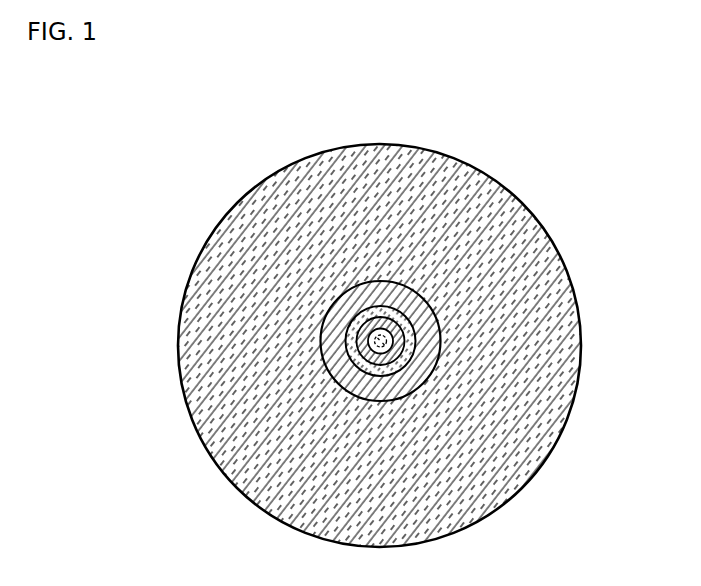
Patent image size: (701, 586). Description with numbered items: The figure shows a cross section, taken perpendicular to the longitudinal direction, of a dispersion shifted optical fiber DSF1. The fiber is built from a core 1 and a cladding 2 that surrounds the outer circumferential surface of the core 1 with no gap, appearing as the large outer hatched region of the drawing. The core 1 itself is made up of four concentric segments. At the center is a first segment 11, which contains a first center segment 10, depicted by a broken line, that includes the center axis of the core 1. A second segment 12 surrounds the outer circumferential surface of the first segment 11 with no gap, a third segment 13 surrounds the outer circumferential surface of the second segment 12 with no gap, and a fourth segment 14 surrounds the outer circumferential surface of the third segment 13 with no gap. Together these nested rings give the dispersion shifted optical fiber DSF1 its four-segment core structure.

The dispersion shifted optical fiber DSF1 is at (558, 163).
The core 1 is at (432, 300).
The cladding 2 is at (567, 322).
The first center segment 10 is at (376, 330).
The first segment 11 is at (380, 329).
The second segment 12 is at (398, 322).
The third segment 13 is at (387, 323).
The fourth segment 14 is at (425, 320).